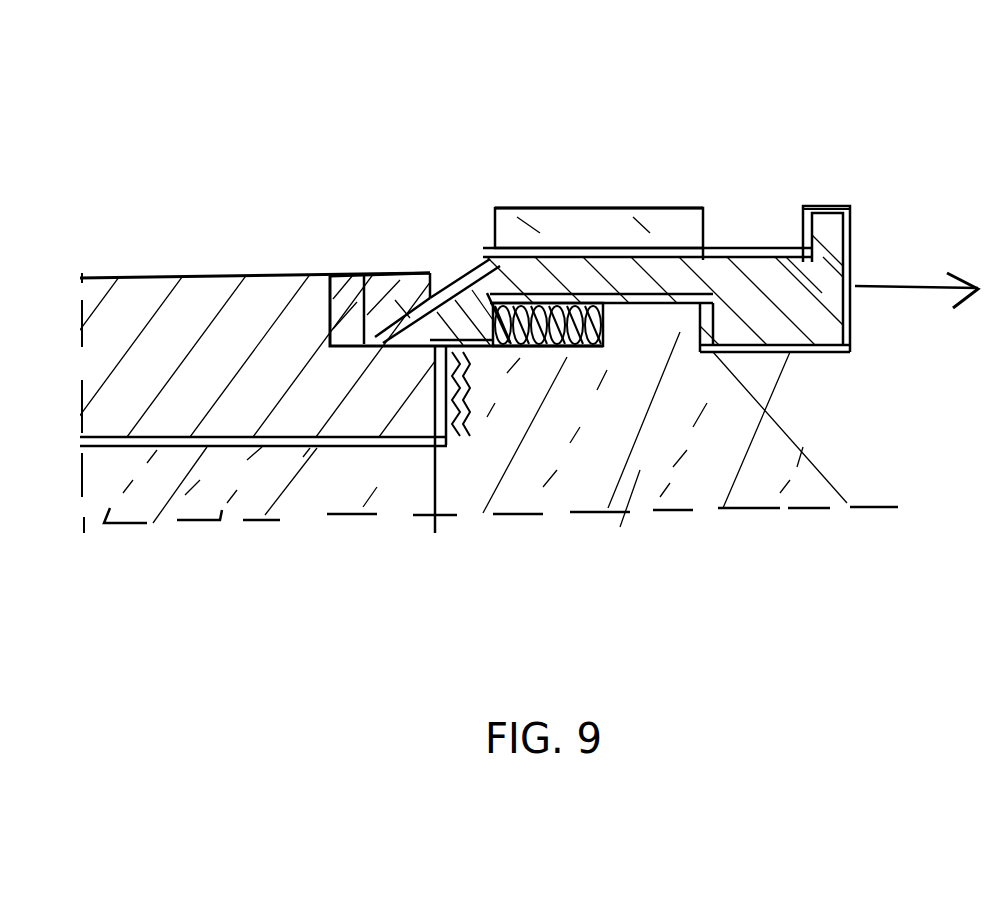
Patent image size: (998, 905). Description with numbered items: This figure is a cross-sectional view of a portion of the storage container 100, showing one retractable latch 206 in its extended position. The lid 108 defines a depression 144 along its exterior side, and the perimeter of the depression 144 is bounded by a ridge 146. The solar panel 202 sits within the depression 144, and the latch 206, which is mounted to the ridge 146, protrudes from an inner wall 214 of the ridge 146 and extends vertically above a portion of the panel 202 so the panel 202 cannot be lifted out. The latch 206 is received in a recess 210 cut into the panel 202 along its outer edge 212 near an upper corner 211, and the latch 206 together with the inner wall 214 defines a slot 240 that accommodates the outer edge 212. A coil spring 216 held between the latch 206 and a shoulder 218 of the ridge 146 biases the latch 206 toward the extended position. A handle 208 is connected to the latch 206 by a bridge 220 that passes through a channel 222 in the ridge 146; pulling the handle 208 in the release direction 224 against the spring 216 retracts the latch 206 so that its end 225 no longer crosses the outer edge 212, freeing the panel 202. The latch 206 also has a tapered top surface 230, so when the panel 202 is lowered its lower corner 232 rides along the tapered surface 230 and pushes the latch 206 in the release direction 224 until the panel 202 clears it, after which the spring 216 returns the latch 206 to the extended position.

The storage container 100 is at (337, 92).
The lid 108 is at (305, 497).
The depression 144 is at (469, 340).
The ridge 146 is at (597, 210).
The solar panel 202 is at (183, 327).
The retractable latch 206 is at (470, 277).
The handle 208 is at (778, 277).
The recess 210 is at (340, 300).
The upper corner 211 is at (427, 290).
The outer edge 212 is at (440, 395).
The inner wall 214 is at (500, 352).
The coil spring 216 is at (537, 300).
The shoulder 218 is at (558, 243).
The bridge 220 is at (652, 305).
The channel 222 is at (702, 249).
The release direction 224 is at (913, 284).
The end of the latch 225 is at (360, 292).
The tapered top surface 230 is at (410, 292).
The lower corner 232 is at (433, 530).
The slot 240 is at (450, 356).